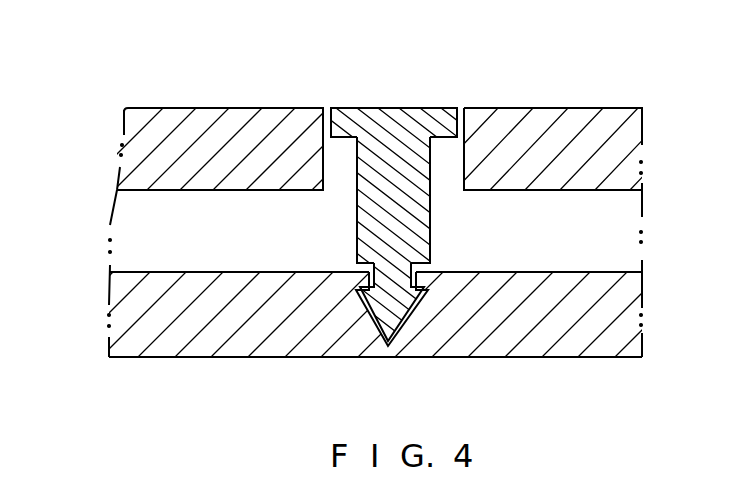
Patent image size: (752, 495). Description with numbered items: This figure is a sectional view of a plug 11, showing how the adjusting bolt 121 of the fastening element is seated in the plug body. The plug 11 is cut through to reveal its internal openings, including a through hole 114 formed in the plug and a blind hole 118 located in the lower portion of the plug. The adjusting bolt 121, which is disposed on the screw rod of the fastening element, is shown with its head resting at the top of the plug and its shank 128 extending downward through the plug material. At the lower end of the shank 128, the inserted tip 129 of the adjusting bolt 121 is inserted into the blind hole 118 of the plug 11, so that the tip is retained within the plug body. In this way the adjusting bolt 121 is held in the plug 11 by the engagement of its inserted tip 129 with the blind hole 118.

The plug 11 is at (142, 92).
The through hole 114 is at (460, 106).
The adjusting bolt 121 is at (362, 108).
The shank 128 is at (430, 217).
The inserted tip 129 is at (398, 315).
The blind hole 118 is at (370, 318).